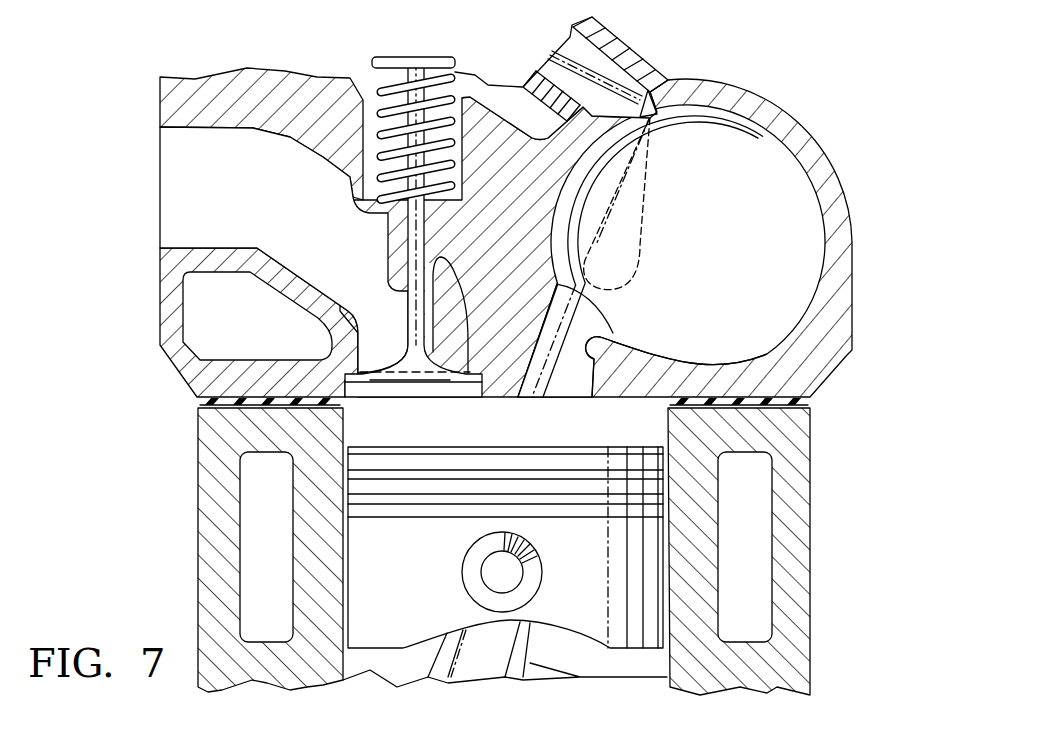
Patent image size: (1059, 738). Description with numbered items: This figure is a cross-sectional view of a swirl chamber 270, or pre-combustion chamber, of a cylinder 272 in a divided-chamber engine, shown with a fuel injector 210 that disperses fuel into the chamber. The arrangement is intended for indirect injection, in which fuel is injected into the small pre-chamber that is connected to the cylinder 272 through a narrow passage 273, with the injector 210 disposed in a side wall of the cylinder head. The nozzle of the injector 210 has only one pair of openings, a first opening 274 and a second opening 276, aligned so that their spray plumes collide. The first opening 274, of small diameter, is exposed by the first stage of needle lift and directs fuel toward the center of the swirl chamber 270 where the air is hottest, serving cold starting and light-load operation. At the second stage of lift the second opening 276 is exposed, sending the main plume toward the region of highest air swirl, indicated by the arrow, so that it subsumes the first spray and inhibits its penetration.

The fuel injector 210 is at (618, 48).
The swirl chamber 270 is at (777, 103).
The cylinder 272 is at (122, 384).
The narrow passage 273 is at (598, 347).
The first opening 274 is at (533, 78).
The second opening 276 is at (656, 120).